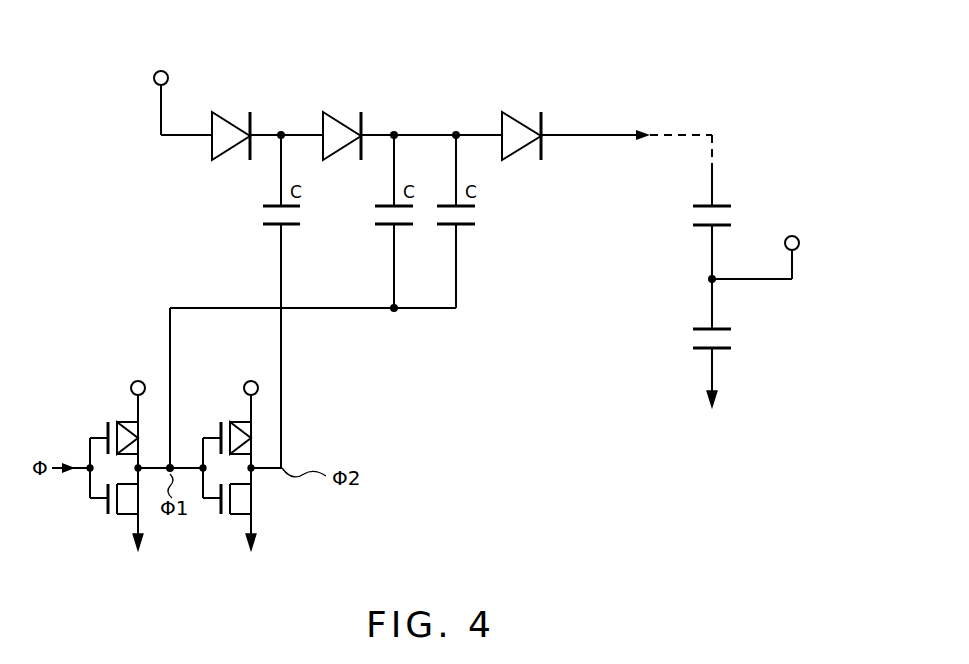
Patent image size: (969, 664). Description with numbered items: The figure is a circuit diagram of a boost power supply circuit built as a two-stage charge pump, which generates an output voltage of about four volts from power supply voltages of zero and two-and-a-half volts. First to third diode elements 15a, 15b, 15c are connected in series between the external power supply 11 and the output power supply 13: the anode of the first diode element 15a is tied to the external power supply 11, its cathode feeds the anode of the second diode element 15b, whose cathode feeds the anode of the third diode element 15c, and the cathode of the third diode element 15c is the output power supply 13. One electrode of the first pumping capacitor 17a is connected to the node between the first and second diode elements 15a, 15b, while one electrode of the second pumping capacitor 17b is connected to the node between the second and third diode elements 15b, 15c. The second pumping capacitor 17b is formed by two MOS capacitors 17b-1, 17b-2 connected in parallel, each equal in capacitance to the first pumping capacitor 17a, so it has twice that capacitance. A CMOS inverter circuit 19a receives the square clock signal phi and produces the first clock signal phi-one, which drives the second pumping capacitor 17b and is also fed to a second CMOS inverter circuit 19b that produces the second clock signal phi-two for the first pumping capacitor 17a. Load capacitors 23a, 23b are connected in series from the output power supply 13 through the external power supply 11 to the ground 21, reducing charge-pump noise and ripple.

The external power supply 11 is at (161, 71).
The output power supply 13 is at (647, 129).
The first diode element 15a is at (230, 116).
The second diode element 15b is at (343, 116).
The third diode element 15c is at (525, 114).
The first pumping capacitor 17a is at (296, 229).
The second pumping capacitor 17b is at (484, 225).
The MOS capacitor 17b-1 is at (404, 231).
The MOS capacitor 17b-2 is at (467, 231).
The CMOS inverter circuit 19a is at (122, 470).
The CMOS inverter circuit 19b is at (235, 470).
The ground 21 is at (711, 412).
The load capacitor 23a is at (688, 215).
The load capacitor 23b is at (688, 337).